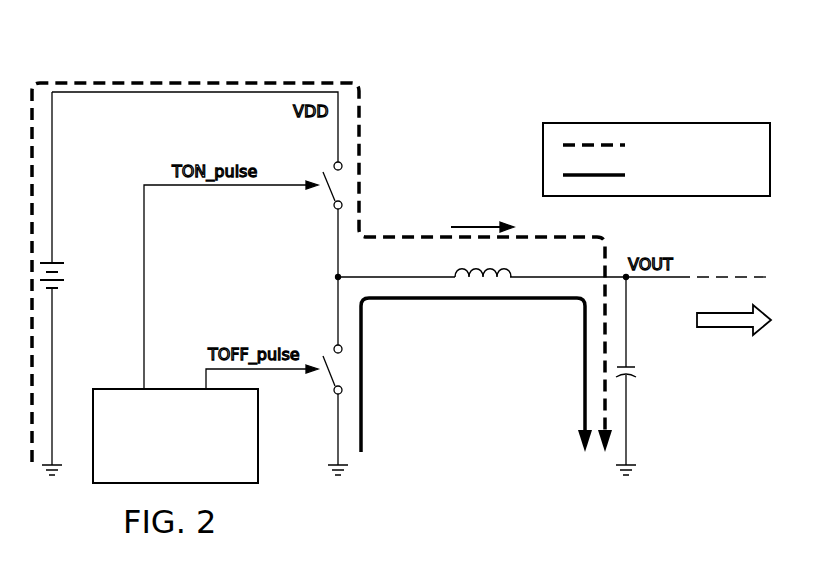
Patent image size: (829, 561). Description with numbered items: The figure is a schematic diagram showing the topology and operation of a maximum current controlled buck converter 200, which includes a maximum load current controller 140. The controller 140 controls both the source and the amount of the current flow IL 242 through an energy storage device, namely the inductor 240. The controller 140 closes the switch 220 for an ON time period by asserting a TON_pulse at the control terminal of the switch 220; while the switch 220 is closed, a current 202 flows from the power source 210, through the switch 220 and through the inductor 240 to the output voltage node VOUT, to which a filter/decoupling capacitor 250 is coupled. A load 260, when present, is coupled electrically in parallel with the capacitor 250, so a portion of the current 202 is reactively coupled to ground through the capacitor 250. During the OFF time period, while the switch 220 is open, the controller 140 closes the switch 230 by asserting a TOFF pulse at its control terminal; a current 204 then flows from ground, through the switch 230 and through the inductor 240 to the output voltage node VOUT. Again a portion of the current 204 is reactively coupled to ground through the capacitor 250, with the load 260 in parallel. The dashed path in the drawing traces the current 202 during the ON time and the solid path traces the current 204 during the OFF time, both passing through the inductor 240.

The maximum current controlled buck converter 200 is at (500, 112).
The current 202 is at (202, 82).
The current 204 is at (363, 380).
The power source 210 is at (66, 272).
The switch 220 is at (332, 194).
The switch 230 is at (332, 380).
The inductor 240 is at (487, 282).
The current flow (IL) 242 is at (458, 224).
The filter/decoupling capacitor (Cout) 250 is at (634, 366).
The load 260 is at (727, 329).
The maximum load current controller 140 is at (113, 388).